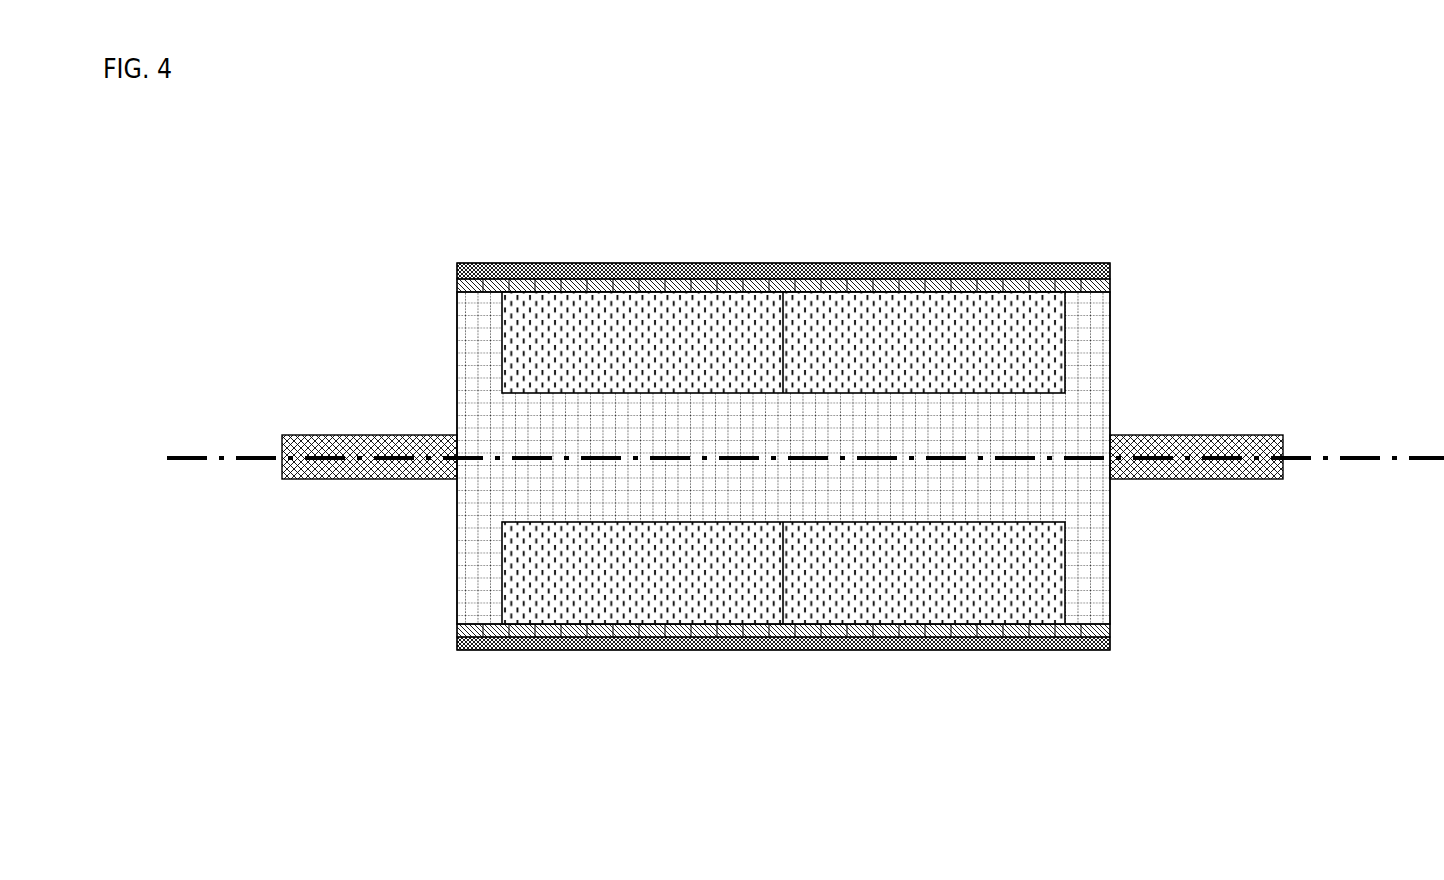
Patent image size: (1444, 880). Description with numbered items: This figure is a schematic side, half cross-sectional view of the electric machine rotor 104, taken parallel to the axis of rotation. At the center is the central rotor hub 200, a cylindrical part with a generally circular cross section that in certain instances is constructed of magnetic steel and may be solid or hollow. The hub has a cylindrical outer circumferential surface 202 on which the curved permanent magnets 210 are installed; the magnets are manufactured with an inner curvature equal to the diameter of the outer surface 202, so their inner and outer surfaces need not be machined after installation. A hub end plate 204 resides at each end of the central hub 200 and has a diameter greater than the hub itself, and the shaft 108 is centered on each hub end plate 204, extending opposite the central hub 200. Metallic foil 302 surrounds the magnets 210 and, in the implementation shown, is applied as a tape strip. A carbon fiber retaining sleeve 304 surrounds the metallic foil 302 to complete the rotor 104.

The electric machine rotor 104 is at (636, 181).
The shaft 108 is at (1243, 435).
The central rotor hub 200 is at (753, 432).
The cylindrical outer circumferential surface 202 is at (587, 390).
The hub end plate 204 is at (1110, 573).
The curved permanent magnets 210 is at (562, 577).
The metallic foil 302 is at (1112, 279).
The carbon fiber retaining sleeve 304 is at (1068, 263).